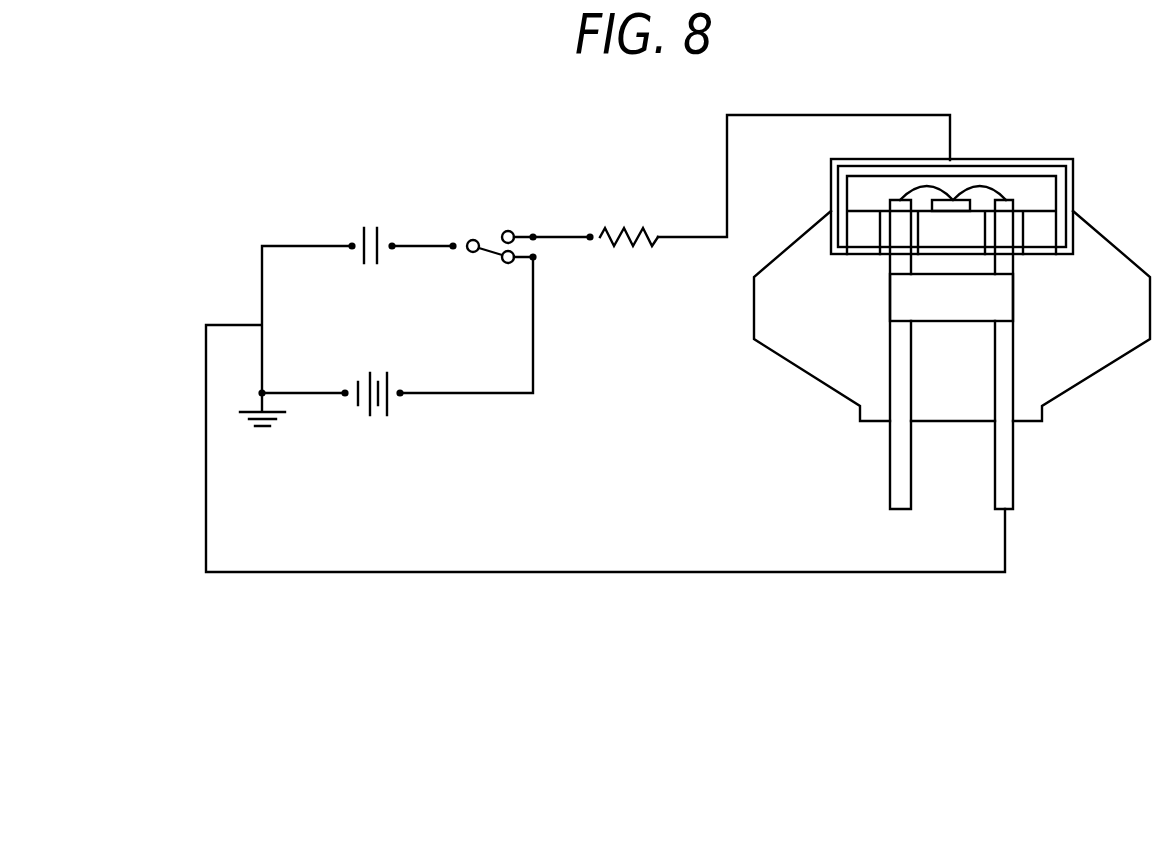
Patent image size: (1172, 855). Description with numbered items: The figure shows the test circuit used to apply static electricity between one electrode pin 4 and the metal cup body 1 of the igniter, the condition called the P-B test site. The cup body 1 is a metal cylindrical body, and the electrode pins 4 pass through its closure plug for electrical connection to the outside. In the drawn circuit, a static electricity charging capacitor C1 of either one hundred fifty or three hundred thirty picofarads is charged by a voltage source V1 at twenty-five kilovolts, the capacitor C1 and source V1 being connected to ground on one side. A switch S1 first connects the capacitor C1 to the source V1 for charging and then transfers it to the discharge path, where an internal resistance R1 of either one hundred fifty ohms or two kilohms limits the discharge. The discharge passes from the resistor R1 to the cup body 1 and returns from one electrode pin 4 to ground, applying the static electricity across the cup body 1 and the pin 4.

The cup body 1 is at (1012, 170).
The electrode pin 4 is at (1003, 473).
The capacitor C1 is at (373, 205).
The voltage source V1 is at (375, 367).
The switch S1 is at (490, 233).
The resistor R1 is at (630, 196).